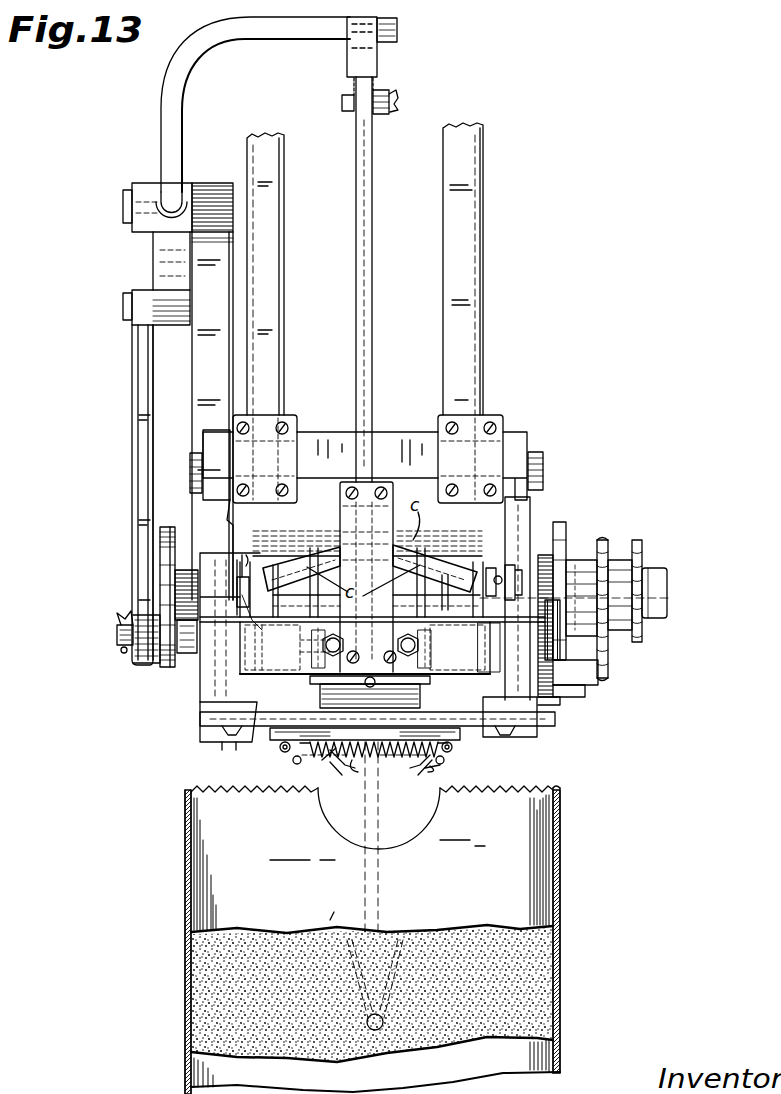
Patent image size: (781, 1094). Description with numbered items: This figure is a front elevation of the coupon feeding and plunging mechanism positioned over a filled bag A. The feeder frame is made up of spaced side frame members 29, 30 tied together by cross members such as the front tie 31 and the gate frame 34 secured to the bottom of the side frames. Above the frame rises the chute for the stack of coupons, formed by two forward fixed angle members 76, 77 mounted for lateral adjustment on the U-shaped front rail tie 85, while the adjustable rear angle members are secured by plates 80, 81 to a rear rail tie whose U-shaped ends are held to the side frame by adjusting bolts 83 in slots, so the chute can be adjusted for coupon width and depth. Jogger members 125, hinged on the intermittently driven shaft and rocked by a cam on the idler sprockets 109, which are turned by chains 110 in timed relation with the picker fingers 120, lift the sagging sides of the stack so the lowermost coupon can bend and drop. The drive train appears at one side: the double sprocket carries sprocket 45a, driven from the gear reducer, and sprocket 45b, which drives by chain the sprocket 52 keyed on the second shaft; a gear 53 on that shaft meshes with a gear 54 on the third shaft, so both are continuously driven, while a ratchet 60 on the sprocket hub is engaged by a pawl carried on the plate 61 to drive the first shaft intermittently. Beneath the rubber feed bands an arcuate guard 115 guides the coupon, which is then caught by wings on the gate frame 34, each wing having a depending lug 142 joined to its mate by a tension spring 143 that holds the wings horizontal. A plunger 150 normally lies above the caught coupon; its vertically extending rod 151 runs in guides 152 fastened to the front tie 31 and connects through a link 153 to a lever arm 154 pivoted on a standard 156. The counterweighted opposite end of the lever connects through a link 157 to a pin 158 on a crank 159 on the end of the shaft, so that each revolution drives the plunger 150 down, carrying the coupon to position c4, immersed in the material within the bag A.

The lever arm 154 is at (276, 30).
The link 153 is at (370, 60).
The vertically extending rod 151 is at (372, 262).
The forward fixed angle member 77 is at (279, 262).
The forward fixed angle member 76 is at (462, 215).
The front rail tie 85 is at (302, 452).
The plate 81 is at (268, 426).
The plate 80 is at (480, 420).
The guides 152 is at (345, 518).
The side frame member 29 is at (218, 516).
The front tie 31 is at (272, 647).
The jogger member 125 is at (447, 612).
The idler sprocket 109 is at (483, 647).
The plunger 150 is at (422, 690).
The arcuate guard 115 is at (335, 695).
The gate frame 34 is at (265, 740).
The depending lug 142 is at (290, 745).
The tension spring 143 is at (312, 765).
The standard 156 is at (214, 380).
The link 157 is at (133, 418).
The crank 159 is at (165, 545).
The pin 158 is at (116, 640).
The picker fingers 120 is at (243, 600).
The chain 110 is at (496, 574).
The adjusting bolt 83 is at (546, 482).
The side frame member 30 is at (516, 505).
The plate 61 is at (566, 540).
The ratchet 60 is at (575, 560).
The sprocket 45b is at (603, 540).
The sprocket 45a is at (637, 540).
The sprocket 52 is at (600, 664).
The gear 54 is at (588, 685).
The gear 53 is at (560, 700).
The bag A is at (552, 842).
The coupon position c4 is at (410, 965).